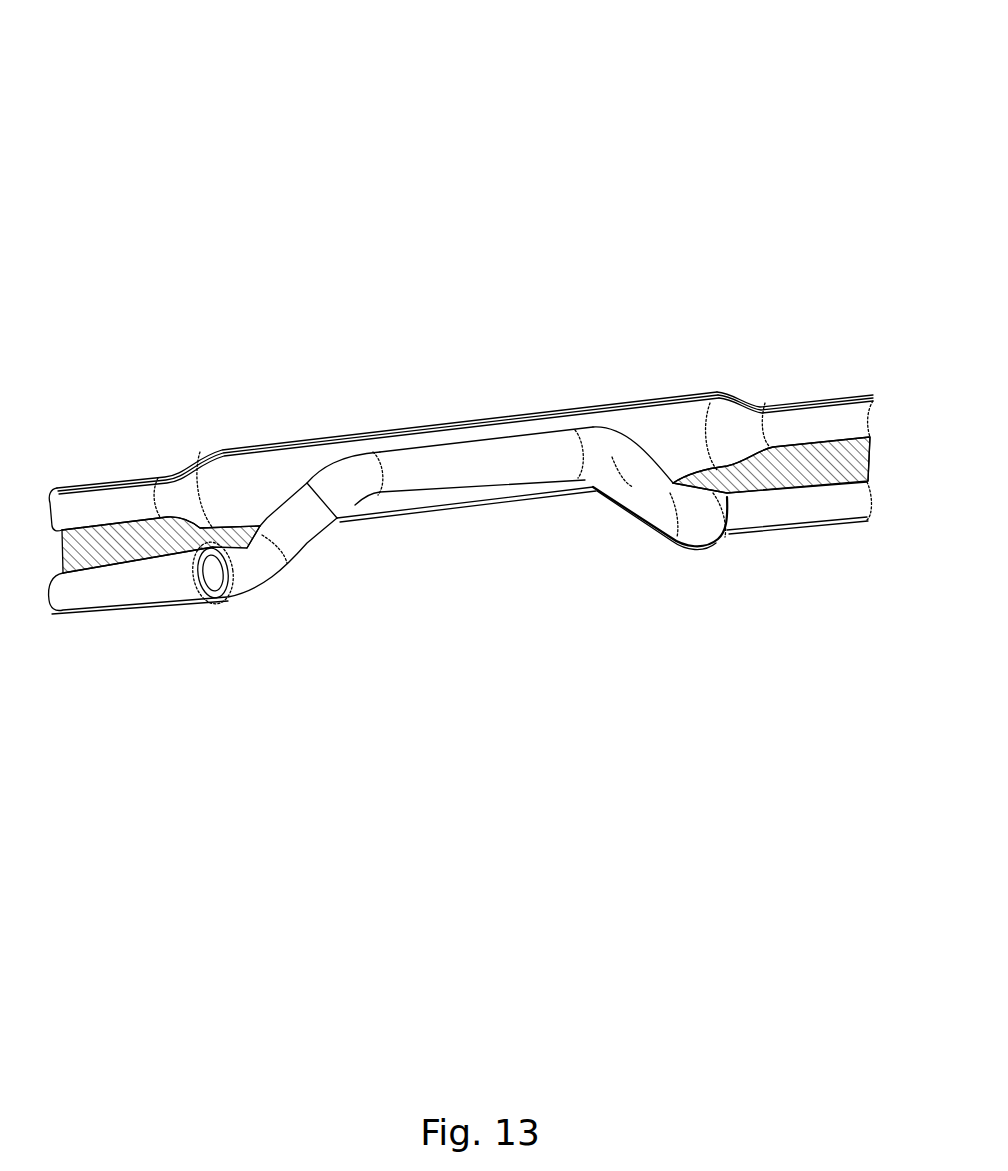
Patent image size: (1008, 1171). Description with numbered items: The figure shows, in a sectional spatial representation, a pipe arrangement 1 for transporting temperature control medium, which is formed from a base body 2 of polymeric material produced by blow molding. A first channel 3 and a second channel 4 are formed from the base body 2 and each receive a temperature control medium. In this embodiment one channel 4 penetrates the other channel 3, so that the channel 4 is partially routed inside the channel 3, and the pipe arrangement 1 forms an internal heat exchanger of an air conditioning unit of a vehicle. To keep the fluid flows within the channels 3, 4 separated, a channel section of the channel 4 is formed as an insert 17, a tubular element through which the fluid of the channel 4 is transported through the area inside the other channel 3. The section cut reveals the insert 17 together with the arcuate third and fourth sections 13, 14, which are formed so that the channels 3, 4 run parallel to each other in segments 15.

The pipe arrangement 1 is at (357, 210).
The base body 2 is at (665, 540).
The first channel 3 is at (171, 577).
The second channel 4 is at (114, 500).
The third section 13 is at (598, 457).
The fourth section 14 is at (347, 494).
The segments 15 is at (801, 383).
The insert 17 is at (487, 474).